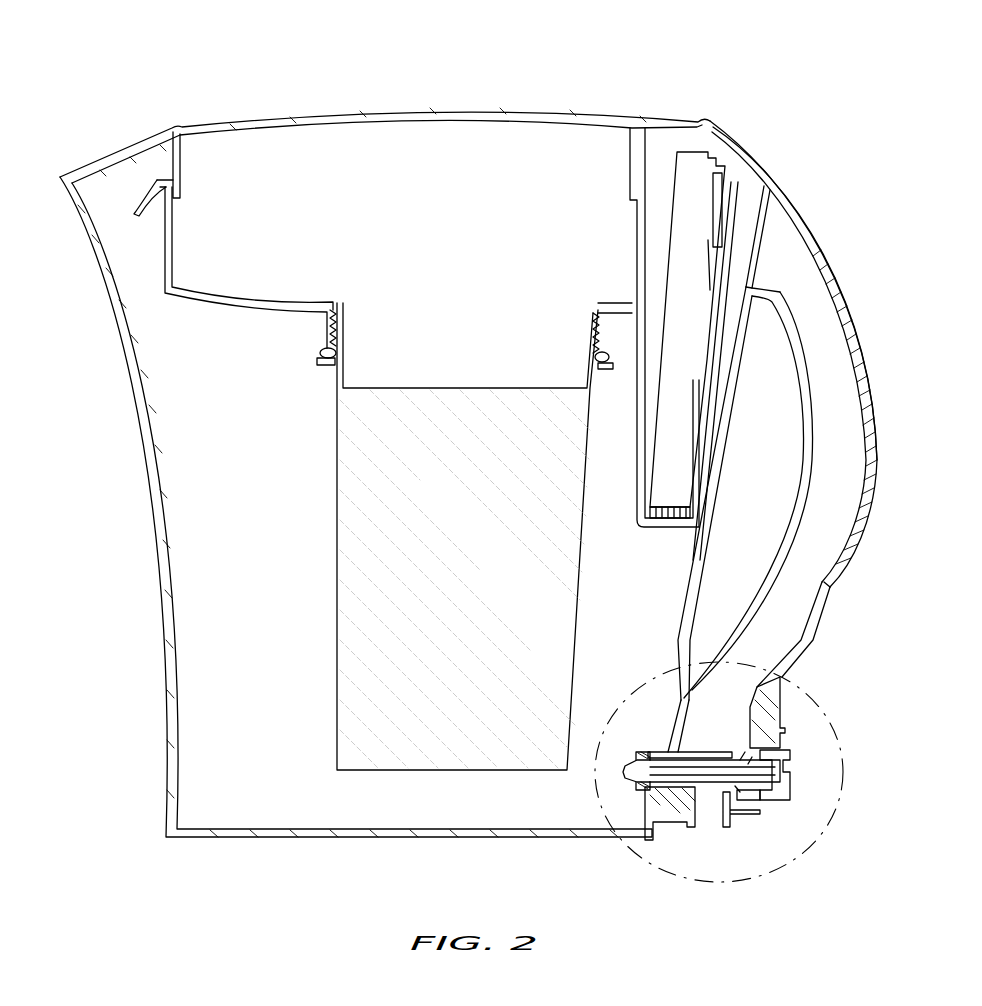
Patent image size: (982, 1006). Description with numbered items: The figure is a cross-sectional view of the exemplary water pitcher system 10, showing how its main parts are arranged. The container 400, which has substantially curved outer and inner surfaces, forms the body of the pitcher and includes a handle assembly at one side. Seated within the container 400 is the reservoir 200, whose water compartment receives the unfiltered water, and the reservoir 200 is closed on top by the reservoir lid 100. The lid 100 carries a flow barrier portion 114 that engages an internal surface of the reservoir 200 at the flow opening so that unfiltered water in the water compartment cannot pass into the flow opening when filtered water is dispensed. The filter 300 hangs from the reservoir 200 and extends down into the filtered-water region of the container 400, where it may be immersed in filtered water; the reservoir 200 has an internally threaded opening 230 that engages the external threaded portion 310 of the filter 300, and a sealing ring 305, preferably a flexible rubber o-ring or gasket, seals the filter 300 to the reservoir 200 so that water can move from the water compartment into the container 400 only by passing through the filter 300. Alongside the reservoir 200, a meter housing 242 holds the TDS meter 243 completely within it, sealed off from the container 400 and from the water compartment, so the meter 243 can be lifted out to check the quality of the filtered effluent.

The water pitcher system 10 is at (144, 94).
The reservoir lid 100 is at (470, 112).
The flow barrier portion 114 is at (182, 162).
The reservoir 200 is at (260, 310).
The internally threaded opening 230 is at (328, 332).
The meter housing 242 is at (633, 530).
The TDS meter 243 is at (722, 146).
The filter 300 is at (345, 520).
The sealing ring 305 is at (590, 357).
The external threaded portion 310 is at (345, 327).
The container 400 is at (150, 503).